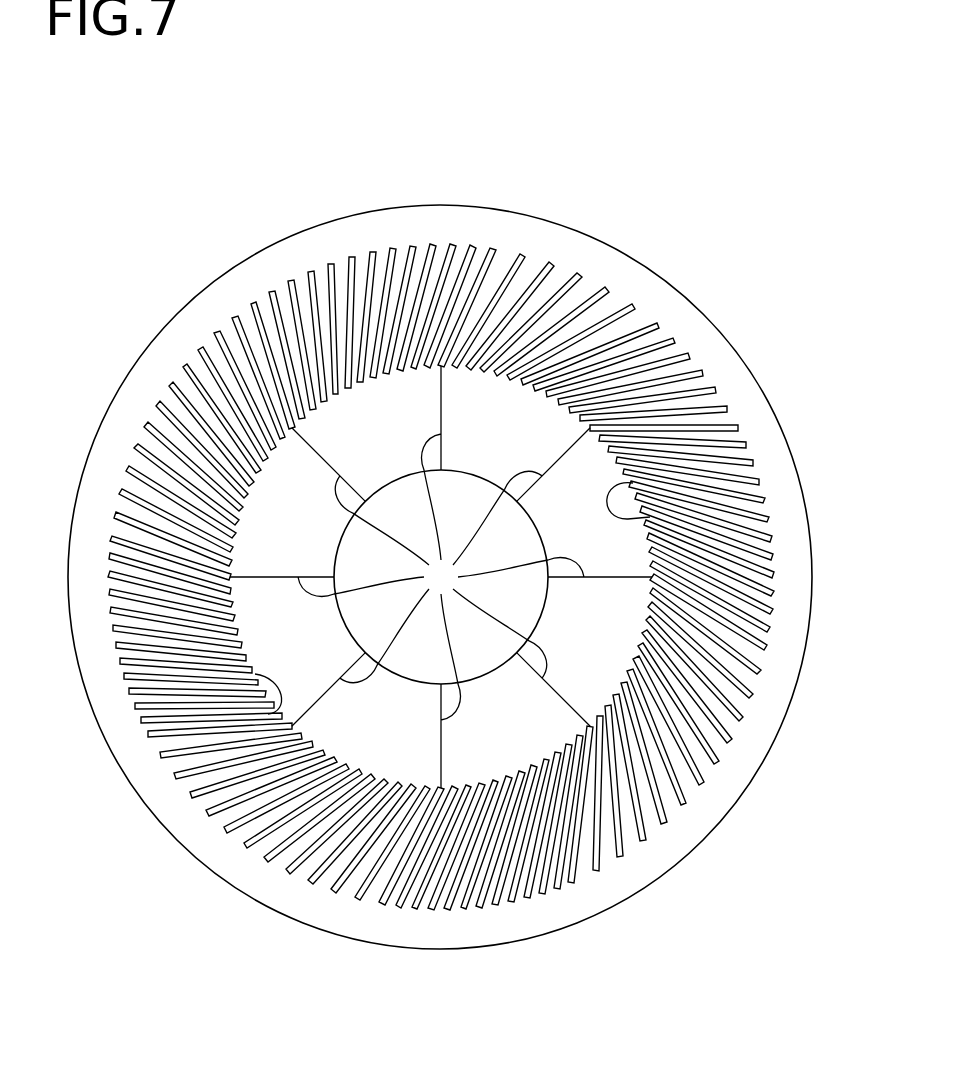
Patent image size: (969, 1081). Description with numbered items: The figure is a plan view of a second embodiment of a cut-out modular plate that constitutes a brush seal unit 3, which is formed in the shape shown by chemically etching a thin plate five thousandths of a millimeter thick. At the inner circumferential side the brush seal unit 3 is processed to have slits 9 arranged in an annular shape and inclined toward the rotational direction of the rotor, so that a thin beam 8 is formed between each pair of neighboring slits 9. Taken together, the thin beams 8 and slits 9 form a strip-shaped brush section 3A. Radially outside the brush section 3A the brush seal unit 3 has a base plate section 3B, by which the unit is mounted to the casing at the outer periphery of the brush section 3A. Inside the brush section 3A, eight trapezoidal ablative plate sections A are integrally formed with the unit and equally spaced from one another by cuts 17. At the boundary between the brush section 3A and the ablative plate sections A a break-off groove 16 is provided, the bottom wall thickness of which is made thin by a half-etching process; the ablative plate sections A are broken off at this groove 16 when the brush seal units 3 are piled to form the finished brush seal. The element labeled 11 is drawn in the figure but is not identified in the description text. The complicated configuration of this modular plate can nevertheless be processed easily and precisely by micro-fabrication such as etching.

The brush seal unit 3 is at (653, 222).
The brush section 3A is at (673, 423).
The base plate section 3B is at (787, 477).
The beam 8 is at (528, 280).
The slit 9 is at (450, 257).
The cutout / notch portion 11 is at (650, 517).
The break-off groove 16 is at (275, 712).
The cut 17 is at (441, 577).
The ablative plate section A is at (255, 627).